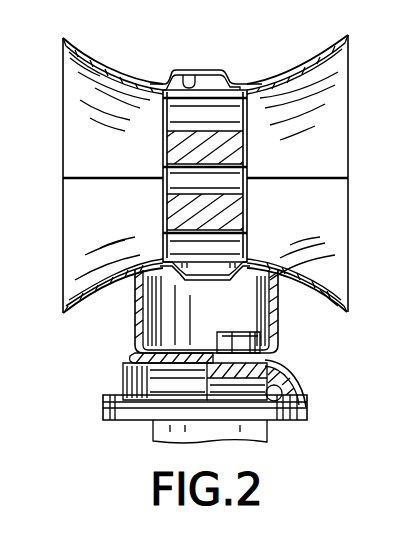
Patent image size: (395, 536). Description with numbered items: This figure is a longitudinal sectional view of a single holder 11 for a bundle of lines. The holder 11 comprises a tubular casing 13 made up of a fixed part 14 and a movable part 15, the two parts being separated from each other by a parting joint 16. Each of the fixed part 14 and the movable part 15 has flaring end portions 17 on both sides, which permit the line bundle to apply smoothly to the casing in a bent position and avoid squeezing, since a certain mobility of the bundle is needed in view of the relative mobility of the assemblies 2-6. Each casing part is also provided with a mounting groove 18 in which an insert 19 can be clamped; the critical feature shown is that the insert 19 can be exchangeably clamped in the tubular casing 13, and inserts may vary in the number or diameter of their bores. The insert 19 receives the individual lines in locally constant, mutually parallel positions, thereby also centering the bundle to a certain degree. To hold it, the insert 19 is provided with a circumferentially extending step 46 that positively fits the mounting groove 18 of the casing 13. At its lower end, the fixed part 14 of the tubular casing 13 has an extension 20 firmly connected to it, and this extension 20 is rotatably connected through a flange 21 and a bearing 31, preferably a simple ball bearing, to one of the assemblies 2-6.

The holder 11 is at (102, 388).
The tubular casing 13 is at (118, 63).
The fixed part 14 is at (89, 304).
The movable part 15 is at (297, 63).
The parting joint 16 is at (328, 176).
The flaring end portions 17 is at (82, 62).
The mounting groove 18 is at (184, 76).
The insert 19 is at (237, 152).
The extension 20 is at (280, 334).
The flange 21 is at (140, 353).
The bearing 31 is at (273, 408).
The step 46 is at (217, 72).
The assemblies 2-6 is at (307, 410).